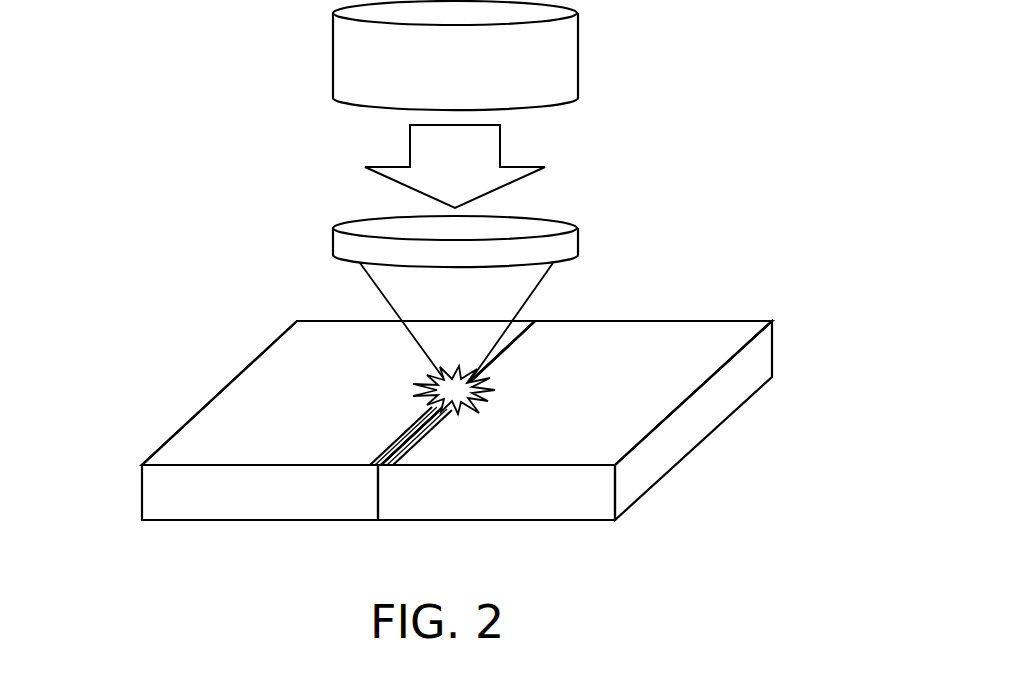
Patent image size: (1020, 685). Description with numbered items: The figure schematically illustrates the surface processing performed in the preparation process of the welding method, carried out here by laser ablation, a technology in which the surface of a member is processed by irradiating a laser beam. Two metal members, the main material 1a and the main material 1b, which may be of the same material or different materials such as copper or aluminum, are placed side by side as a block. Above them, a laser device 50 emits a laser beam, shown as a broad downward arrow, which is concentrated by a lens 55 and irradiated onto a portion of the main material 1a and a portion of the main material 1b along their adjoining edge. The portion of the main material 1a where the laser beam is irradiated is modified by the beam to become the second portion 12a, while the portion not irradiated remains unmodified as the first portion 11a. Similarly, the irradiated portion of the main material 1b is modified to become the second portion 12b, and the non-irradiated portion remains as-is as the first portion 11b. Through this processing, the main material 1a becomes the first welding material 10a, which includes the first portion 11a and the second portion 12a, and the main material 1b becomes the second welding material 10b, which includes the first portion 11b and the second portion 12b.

The laser device 50 is at (560, 60).
The lens 55 is at (560, 247).
The main material 1a is at (285, 420).
The first welding material 10a is at (256, 389).
The main material 1b is at (643, 420).
The second welding material 10b is at (660, 392).
The first portion 11a is at (325, 355).
The first portion 11b is at (690, 353).
The second portion 12a is at (380, 466).
The second portion 12b is at (396, 466).